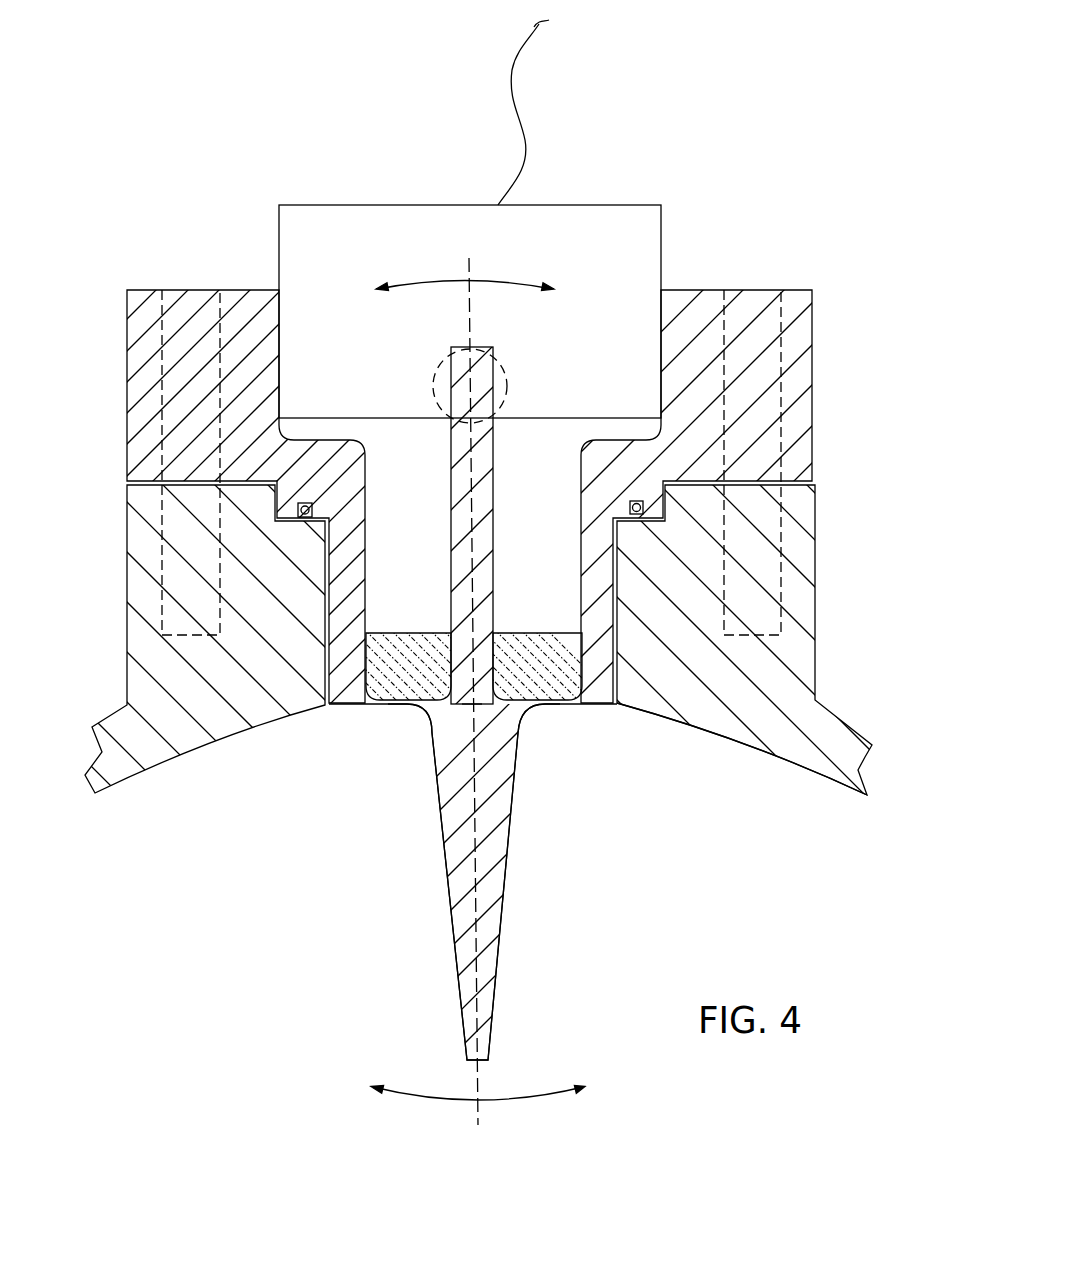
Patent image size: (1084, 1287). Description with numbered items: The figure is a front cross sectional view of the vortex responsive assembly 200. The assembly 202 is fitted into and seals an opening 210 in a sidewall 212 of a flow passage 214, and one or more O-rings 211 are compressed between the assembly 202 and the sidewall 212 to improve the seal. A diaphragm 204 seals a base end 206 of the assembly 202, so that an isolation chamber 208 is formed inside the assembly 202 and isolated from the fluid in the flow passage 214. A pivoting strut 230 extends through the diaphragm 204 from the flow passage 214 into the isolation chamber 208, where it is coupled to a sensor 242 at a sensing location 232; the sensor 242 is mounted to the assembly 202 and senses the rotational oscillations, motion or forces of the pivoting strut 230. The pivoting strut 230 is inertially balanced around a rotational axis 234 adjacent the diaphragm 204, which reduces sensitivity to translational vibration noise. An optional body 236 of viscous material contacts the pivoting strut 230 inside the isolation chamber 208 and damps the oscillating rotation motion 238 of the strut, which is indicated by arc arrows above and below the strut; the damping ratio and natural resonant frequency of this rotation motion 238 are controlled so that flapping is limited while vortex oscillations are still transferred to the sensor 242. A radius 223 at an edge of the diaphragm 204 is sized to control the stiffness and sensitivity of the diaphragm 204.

The vortex responsive assembly 200 is at (716, 127).
The assembly 202 is at (242, 402).
The diaphragm 204 is at (395, 707).
The base end 206 is at (598, 705).
The isolation chamber 208 is at (434, 555).
The opening 210 is at (327, 633).
The O-ring 211 is at (646, 500).
The sidewall 212 is at (753, 748).
The flow passage 214 is at (299, 914).
The radius 223 is at (541, 728).
The pivoting strut 230 is at (496, 498).
The sensing location 232 is at (507, 372).
The rotational axis 234 is at (438, 792).
The body of viscous material 236 is at (546, 632).
The rotation motion 238 is at (493, 1100).
The sensor 242 is at (362, 272).